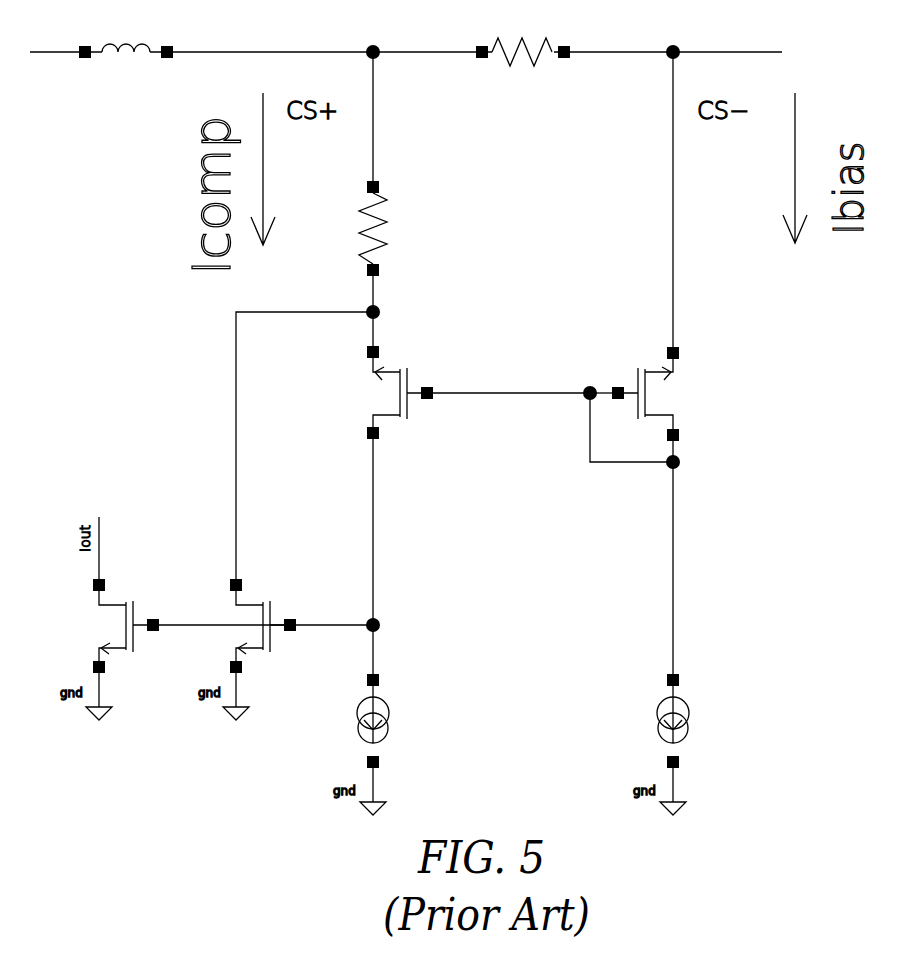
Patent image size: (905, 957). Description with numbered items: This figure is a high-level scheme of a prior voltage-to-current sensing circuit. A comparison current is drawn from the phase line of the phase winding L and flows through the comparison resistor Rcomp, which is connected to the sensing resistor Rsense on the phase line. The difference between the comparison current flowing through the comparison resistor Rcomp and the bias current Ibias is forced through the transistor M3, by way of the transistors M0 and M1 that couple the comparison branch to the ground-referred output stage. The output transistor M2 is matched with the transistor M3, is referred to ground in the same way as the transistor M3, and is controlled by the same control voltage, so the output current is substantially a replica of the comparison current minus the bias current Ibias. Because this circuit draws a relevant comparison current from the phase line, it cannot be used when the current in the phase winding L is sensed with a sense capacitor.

The phase winding L is at (126, 44).
The sense resistor Rsense is at (523, 64).
The comparison resistor Rcomp is at (341, 228).
The transistor M0 is at (388, 392).
The transistor M1 is at (655, 394).
The output transistor M2 is at (113, 626).
The transistor M3 is at (250, 626).
The bias current Ibias is at (354, 721).